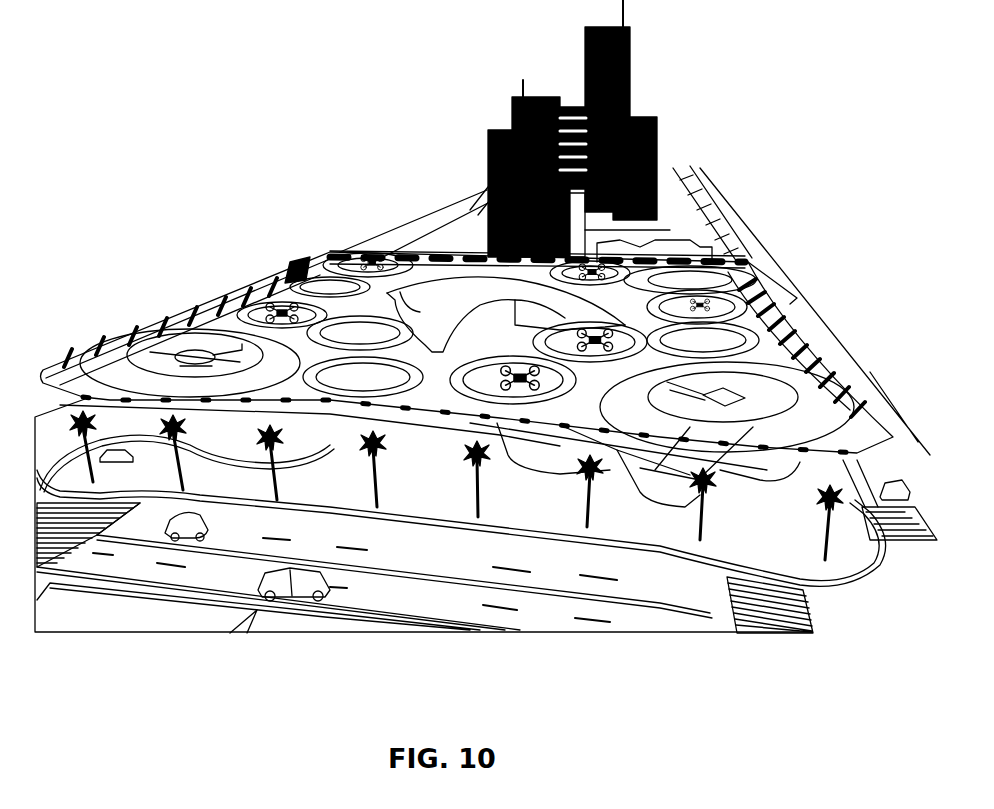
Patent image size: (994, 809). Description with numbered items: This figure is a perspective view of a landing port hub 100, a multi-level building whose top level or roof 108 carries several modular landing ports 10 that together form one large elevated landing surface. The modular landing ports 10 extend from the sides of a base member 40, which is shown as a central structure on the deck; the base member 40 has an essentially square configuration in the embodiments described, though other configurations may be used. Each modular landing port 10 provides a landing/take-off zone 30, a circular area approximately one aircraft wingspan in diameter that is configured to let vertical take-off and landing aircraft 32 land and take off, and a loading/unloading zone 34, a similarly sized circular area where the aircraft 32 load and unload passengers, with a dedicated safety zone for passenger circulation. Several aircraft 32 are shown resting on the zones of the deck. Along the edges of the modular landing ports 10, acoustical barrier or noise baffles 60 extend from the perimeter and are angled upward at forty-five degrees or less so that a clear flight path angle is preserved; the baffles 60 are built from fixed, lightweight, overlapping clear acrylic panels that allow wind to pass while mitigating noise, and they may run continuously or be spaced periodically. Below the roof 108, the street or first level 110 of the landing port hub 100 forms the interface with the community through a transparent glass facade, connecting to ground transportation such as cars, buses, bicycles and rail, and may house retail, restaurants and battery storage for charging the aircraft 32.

The modular landing port 10 is at (328, 232).
The landing/take-off zone 30 is at (412, 262).
The vertical take-off and landing aircraft 32 is at (538, 390).
The loading/unloading zone 34 is at (287, 292).
The base member 40 is at (497, 317).
The acoustical barrier/noise baffle 60 is at (88, 350).
The landing port hub 100 is at (752, 672).
The roof 108 is at (624, 440).
The first level 110 is at (433, 450).